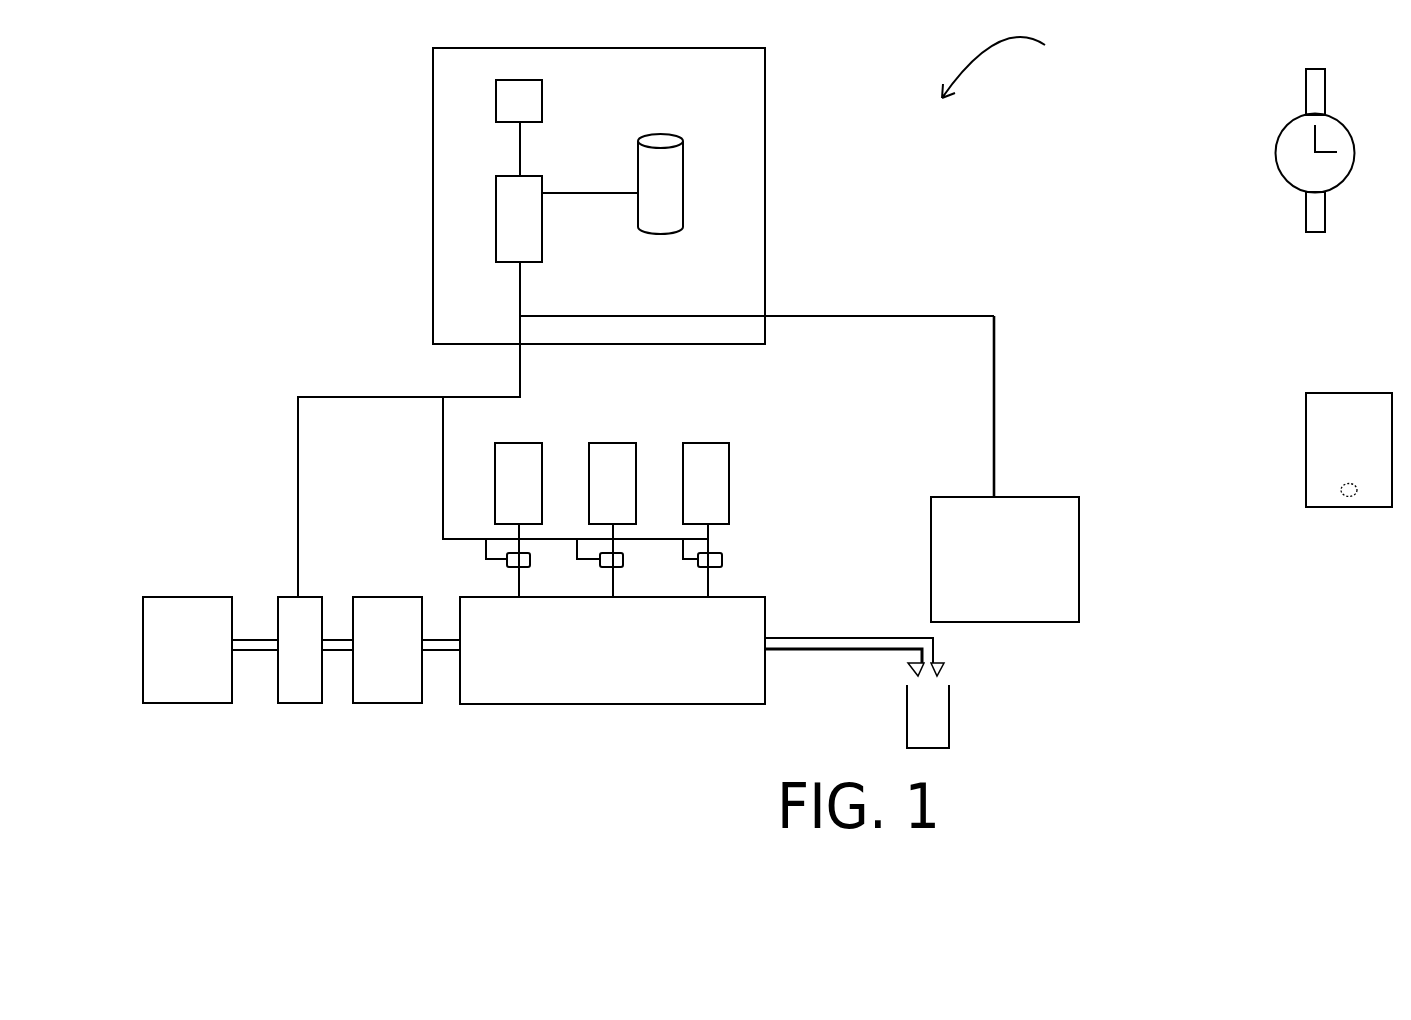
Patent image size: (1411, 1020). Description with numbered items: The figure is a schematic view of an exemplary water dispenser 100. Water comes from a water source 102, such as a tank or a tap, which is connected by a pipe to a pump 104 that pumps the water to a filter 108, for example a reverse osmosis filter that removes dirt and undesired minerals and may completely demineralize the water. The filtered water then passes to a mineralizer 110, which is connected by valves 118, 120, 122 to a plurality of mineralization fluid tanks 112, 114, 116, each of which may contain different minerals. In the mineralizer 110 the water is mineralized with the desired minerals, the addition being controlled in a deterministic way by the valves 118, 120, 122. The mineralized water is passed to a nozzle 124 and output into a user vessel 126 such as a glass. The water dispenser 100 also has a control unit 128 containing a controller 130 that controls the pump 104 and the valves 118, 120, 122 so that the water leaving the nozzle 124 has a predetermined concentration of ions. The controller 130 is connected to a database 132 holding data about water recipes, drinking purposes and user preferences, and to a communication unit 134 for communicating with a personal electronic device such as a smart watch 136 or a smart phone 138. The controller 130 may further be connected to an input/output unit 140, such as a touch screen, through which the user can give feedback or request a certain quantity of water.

The water dispenser 100 is at (1014, 67).
The water source 102 is at (188, 597).
The pump 104 is at (300, 597).
The filter 108 is at (388, 597).
The mineralizer 110 is at (752, 597).
The mineralization fluid tank 112 is at (520, 443).
The mineralization fluid tank 114 is at (614, 443).
The mineralization fluid tank 116 is at (709, 443).
The valve 118 is at (511, 567).
The valve 120 is at (603, 567).
The valve 122 is at (703, 567).
The nozzle 124 is at (908, 665).
The user vessel 126 is at (907, 735).
The control unit 128 is at (765, 114).
The controller 130 is at (514, 222).
The database 132 is at (662, 183).
The communication unit 134 is at (516, 101).
The smart watch 136 is at (1275, 154).
The smart phone 138 is at (1306, 449).
The input/output unit 140 is at (1080, 555).